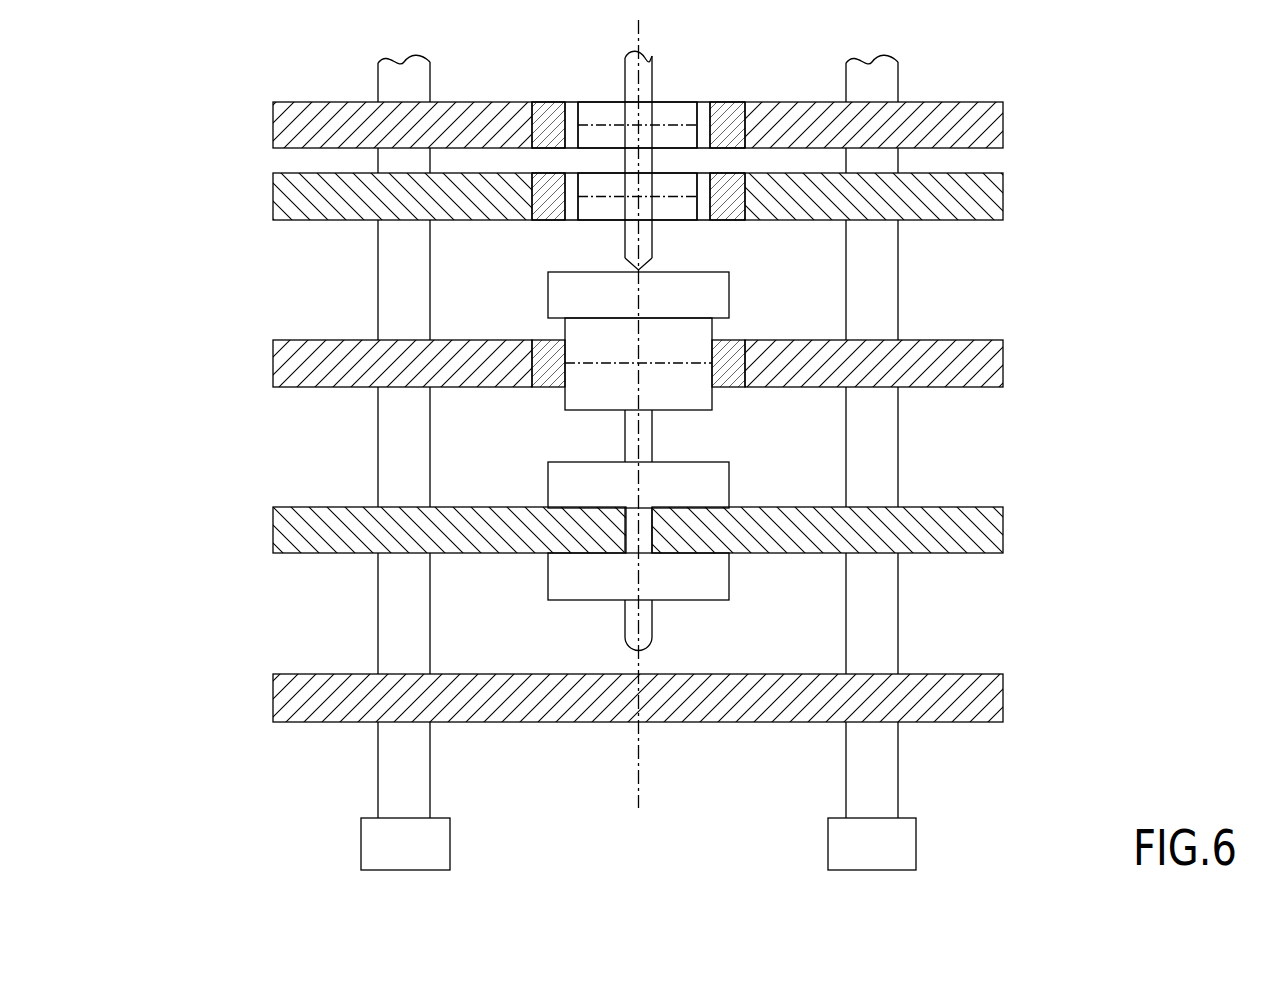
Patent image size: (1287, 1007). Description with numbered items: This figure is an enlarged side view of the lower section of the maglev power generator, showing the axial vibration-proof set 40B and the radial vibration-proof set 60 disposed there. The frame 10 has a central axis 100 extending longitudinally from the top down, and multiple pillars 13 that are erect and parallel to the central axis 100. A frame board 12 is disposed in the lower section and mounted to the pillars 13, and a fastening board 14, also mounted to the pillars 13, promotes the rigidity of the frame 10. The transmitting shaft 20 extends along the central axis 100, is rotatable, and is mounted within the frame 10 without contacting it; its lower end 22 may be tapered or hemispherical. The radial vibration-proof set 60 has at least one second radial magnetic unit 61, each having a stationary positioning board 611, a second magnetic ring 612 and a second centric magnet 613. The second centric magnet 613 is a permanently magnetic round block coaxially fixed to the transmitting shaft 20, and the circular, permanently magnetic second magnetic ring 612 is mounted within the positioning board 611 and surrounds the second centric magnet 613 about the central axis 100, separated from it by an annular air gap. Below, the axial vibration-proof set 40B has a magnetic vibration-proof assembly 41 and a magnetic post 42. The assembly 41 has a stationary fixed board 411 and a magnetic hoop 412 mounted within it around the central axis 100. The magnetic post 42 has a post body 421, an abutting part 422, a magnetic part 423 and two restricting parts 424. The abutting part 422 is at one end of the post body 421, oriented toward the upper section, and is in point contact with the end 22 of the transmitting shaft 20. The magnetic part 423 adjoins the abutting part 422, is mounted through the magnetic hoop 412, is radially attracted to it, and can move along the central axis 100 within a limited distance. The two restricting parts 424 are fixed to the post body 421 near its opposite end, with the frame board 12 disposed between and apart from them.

The frame 10 is at (278, 602).
The frame board 12 is at (280, 530).
The pillar 13 is at (395, 768).
The fastening board 14 is at (290, 698).
The transmitting shaft 20 is at (640, 159).
The end of the transmitting shaft 22 is at (628, 262).
The radial vibration-proof set 60 is at (550, 154).
The second radial magnetic unit 61 is at (589, 154).
The positioning board 611 is at (320, 108).
The second magnetic ring 612 is at (545, 100).
The second centric magnet 613 is at (608, 100).
The axial vibration-proof set 40B is at (573, 467).
The magnetic vibration-proof assembly 41 is at (600, 362).
The fixed board 411 is at (320, 378).
The magnetic hoop 412 is at (538, 338).
The magnetic post 42 is at (642, 467).
The post body 421 is at (625, 440).
The abutting part 422 is at (712, 298).
The magnetic part 423 is at (712, 398).
The restricting part 424 is at (729, 482).
The central axis 100 is at (640, 785).